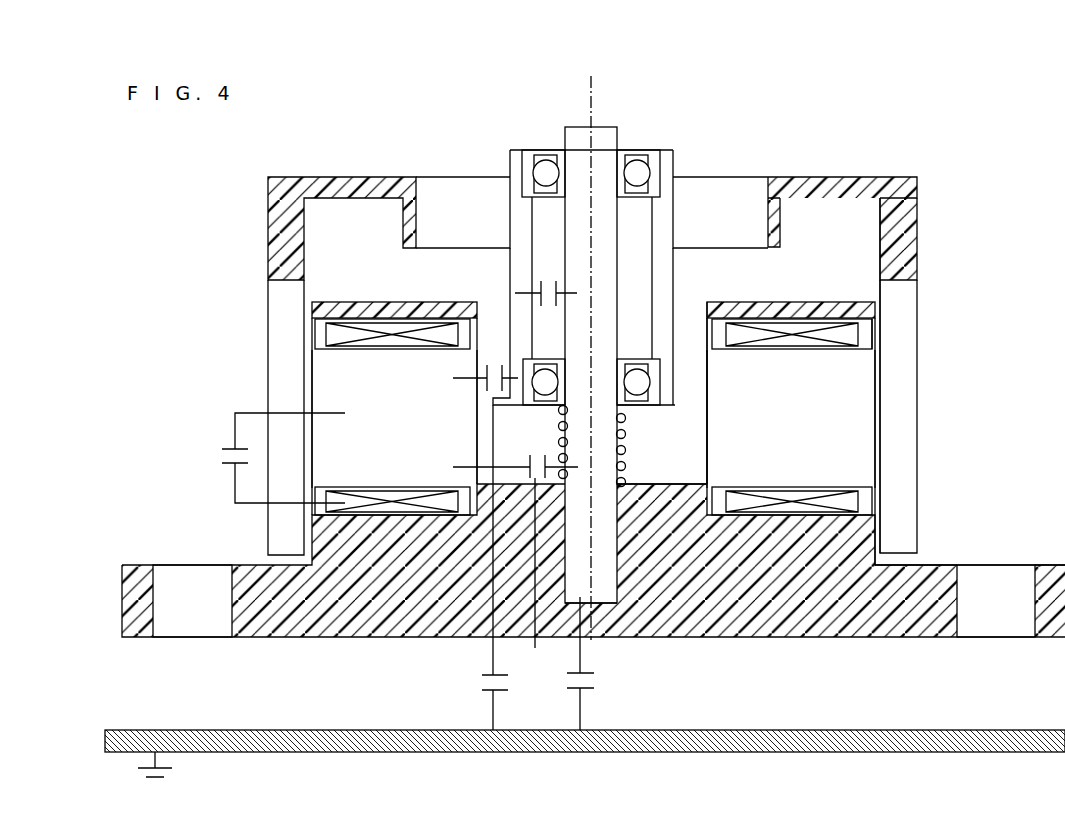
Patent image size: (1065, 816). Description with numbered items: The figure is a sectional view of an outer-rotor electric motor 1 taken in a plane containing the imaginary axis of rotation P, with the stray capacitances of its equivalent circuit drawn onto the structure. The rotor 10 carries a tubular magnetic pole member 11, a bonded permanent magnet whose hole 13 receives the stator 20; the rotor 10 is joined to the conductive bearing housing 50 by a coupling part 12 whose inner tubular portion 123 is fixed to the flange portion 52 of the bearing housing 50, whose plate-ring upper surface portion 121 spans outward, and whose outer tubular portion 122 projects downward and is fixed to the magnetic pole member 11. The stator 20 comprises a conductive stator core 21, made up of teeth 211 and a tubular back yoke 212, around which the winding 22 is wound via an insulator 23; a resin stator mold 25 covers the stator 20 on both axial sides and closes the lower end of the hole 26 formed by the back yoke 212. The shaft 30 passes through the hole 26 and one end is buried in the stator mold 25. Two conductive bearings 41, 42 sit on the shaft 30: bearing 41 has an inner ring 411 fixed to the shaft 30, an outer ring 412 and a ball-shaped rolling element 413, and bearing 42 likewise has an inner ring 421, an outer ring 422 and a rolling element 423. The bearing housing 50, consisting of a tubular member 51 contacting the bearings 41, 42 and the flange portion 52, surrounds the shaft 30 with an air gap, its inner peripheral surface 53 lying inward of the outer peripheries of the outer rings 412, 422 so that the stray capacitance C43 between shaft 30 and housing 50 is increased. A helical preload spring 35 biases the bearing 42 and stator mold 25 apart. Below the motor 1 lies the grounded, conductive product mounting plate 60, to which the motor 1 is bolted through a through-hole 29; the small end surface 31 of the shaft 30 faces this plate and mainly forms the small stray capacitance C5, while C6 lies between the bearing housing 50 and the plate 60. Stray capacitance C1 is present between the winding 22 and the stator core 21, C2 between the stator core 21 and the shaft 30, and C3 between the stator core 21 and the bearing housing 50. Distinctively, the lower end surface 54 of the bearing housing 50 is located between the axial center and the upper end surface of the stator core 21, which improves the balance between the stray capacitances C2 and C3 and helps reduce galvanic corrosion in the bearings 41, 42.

The electric motor 1 is at (392, 156).
The axis of rotation P is at (590, 347).
The rotor 10 is at (950, 398).
The magnetic pole member 11 is at (901, 532).
The coupling part 12 is at (925, 116).
The upper surface portion 121 is at (842, 188).
The outer tubular portion 122 is at (895, 215).
The inner tubular portion 123 is at (781, 196).
The hole 13 is at (876, 287).
The stator 20 is at (833, 545).
The stator core 21 is at (996, 420).
The teeth 211 is at (857, 431).
The back yoke 212 is at (718, 465).
The winding 22 is at (856, 332).
The insulator 23 is at (880, 346).
The stator mold 25 is at (812, 312).
The hole 26 is at (707, 373).
The through-hole 29 is at (1022, 600).
The shaft 30 is at (579, 128).
The end surface 31 is at (592, 608).
The preload spring 35 is at (640, 484).
The bearing 41 is at (660, 150).
The inner ring 411 is at (528, 150).
The outer ring 412 is at (533, 158).
The rolling element 413 is at (546, 175).
The bearing 42 is at (633, 358).
The inner ring 421 is at (548, 392).
The outer ring 422 is at (540, 392).
The rolling element 423 is at (530, 408).
The bearing housing 50 is at (760, 134).
The tubular member 51 is at (665, 280).
The flange portion 52 is at (747, 190).
The inner peripheral surface 53 is at (652, 305).
The end surface 54 is at (670, 408).
The product mounting plate 60 is at (283, 752).
The stray capacitance C1 is at (269, 458).
The stray capacitance C2 is at (515, 564).
The stray capacitance C3 is at (490, 362).
The stray capacitance C43 is at (540, 276).
The stray capacitance C5 is at (591, 666).
The stray capacitance C6 is at (480, 567).